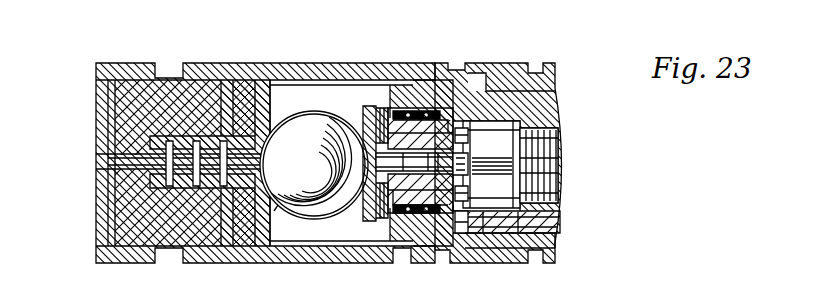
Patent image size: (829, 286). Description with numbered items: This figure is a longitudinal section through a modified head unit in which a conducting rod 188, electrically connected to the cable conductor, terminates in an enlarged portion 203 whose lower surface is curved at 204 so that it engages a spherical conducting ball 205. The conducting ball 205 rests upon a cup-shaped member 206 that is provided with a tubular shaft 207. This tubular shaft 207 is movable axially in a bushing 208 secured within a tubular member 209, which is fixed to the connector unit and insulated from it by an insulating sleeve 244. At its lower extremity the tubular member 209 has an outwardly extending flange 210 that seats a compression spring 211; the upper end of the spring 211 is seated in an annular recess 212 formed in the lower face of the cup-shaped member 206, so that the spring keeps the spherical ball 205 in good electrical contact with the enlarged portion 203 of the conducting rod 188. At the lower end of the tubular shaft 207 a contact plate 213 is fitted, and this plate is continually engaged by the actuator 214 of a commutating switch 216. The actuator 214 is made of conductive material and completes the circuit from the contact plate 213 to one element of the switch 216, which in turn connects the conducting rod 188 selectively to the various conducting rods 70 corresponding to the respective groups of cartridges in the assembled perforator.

The conducting rod 188 is at (100, 153).
The enlarged portion 203 is at (240, 73).
The curved lower surface 204 is at (403, 147).
The spherical conducting ball 205 is at (314, 165).
The cup-shaped member 206 is at (356, 100).
The tubular shaft 207 is at (392, 100).
The tubular member 209 is at (425, 103).
The insulating sleeve 244 is at (454, 118).
The outwardly extending flange 210 is at (462, 150).
The bushing 208 is at (497, 58).
The actuator 214 is at (457, 152).
The commutating switch 216 is at (545, 141).
The annular recess 212 is at (356, 215).
The compression spring 211 is at (422, 212).
The contact plate 213 is at (440, 238).
The conducting rods 70 is at (512, 235).